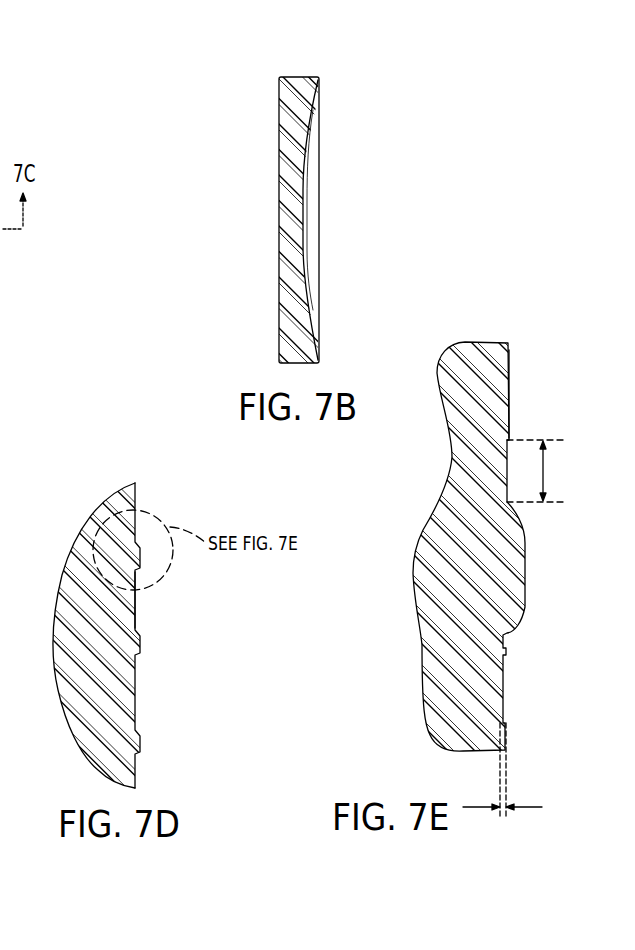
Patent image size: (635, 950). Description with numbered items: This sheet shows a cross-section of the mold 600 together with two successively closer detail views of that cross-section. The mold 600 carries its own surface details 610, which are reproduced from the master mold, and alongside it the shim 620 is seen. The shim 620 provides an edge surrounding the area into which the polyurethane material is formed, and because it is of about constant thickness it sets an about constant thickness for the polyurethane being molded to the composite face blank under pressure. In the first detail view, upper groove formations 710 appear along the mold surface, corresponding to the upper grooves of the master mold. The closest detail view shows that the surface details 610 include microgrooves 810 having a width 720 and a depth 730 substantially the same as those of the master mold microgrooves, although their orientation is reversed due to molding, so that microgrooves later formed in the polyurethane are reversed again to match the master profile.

In FIG. 7B, the mold 600 is at (302, 194).
In FIG. 7B, the surface details 610 is at (326, 159).
In FIG. 7E, the surface details 610 is at (562, 371).
In FIG. 7B, the shim 620 is at (320, 128).
In FIG. 7D, the upper groove formations 710 is at (141, 557).
In FIG. 7E, the width 720 is at (546, 470).
In FIG. 7E, the depth 730 is at (528, 805).
In FIG. 7D, the microgrooves 810 is at (137, 604).
In FIG. 7E, the microgrooves 810 is at (511, 393).